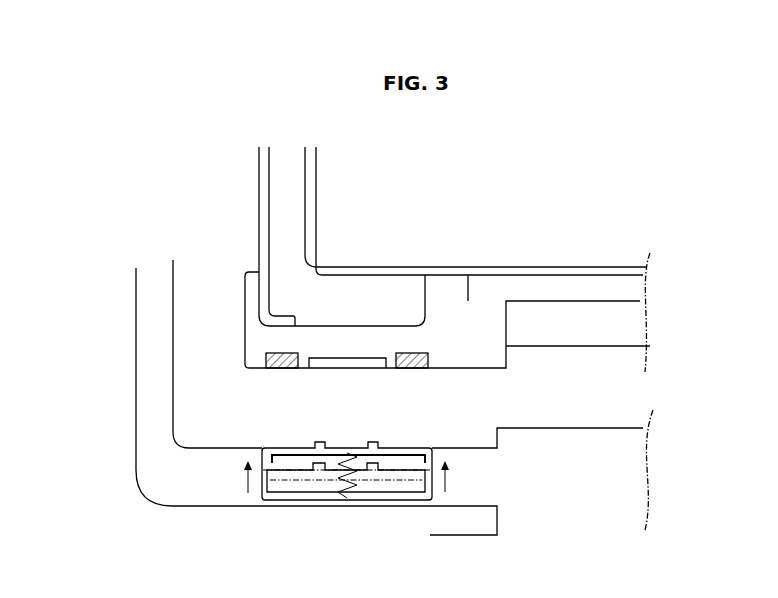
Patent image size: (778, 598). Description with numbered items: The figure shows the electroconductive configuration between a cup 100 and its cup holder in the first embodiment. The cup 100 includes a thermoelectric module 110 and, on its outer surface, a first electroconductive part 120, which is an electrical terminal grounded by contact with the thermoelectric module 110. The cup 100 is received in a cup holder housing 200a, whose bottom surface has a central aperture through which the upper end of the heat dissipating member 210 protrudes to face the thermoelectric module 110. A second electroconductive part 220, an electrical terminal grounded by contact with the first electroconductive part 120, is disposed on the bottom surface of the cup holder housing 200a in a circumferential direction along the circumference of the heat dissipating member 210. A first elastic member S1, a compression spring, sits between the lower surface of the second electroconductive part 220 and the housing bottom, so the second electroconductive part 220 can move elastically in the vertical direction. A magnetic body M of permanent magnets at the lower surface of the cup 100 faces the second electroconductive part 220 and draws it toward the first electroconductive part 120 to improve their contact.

The cup 100 is at (369, 257).
The thermoelectric module 110 is at (590, 278).
The first electroconductive part 120 is at (345, 355).
The magnetic body M is at (277, 352).
The cup holder housing 200a is at (152, 402).
The heat dissipating member 210 is at (612, 470).
The second electroconductive part 220 is at (275, 445).
The first elastic member S1 is at (345, 495).